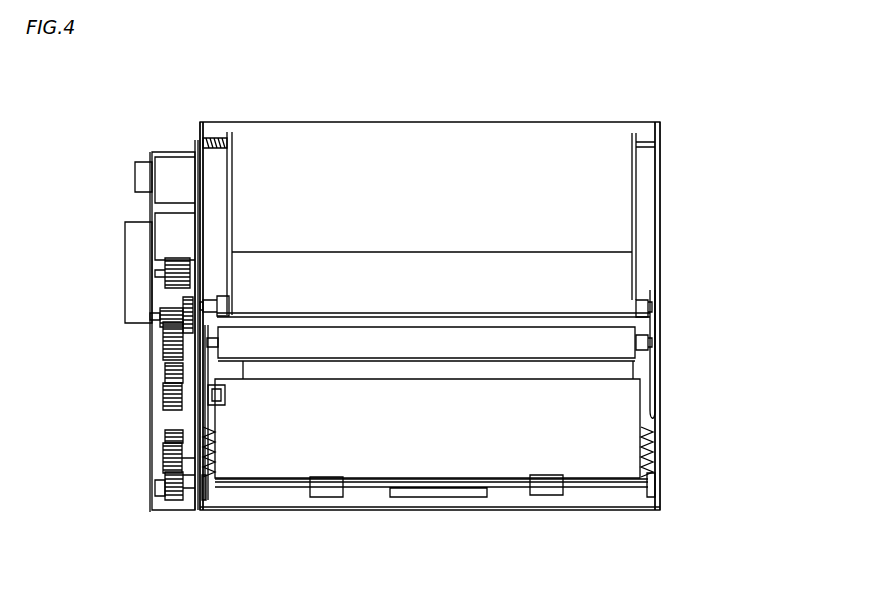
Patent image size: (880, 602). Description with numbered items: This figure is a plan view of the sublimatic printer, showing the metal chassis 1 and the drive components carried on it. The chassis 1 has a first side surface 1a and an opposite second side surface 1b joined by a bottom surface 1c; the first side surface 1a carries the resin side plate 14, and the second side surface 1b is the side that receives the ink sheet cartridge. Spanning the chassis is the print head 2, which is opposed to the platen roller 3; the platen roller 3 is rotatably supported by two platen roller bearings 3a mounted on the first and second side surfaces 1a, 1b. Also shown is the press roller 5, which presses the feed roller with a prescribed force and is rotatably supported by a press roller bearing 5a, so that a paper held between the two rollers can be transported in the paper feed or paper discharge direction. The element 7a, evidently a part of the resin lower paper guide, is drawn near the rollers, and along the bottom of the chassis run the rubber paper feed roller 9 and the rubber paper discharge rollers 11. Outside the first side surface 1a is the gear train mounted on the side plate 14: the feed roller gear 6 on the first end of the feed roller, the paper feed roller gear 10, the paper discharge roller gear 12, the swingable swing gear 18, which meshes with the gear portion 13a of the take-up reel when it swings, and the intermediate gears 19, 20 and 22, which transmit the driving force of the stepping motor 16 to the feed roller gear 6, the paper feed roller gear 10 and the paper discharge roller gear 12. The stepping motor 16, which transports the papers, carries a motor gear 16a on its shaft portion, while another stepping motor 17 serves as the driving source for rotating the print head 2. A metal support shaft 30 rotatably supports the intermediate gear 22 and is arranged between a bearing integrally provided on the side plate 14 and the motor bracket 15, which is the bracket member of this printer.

The chassis 1 is at (238, 510).
The first side surface 1a is at (203, 122).
The second side surface 1b is at (660, 122).
The bottom surface 1c is at (280, 495).
The print head 2 is at (435, 283).
The platen roller 3 is at (638, 300).
The platen roller bearing 3a is at (212, 308).
The press roller 5 is at (638, 330).
The press roller bearing 5a is at (645, 352).
The feed roller gear 6 is at (167, 380).
The thermal head support 7a is at (620, 372).
The paper feed roller 9 is at (438, 492).
The paper feed roller gear 10 is at (167, 490).
The paper discharge rollers 11 is at (330, 497).
The paper discharge roller gear 12 is at (167, 500).
The gear portion 13a is at (165, 403).
The side plate 14 is at (196, 140).
The motor bracket 15 is at (153, 152).
The stepping motor 16 is at (150, 232).
The motor gear 16a is at (167, 266).
The stepping motor 17 is at (137, 166).
The swing gear 18 is at (163, 355).
The intermediate gear 19 is at (165, 428).
The intermediate gear 20 is at (163, 455).
The intermediate gear 22 is at (160, 330).
The support shaft 30 is at (152, 312).